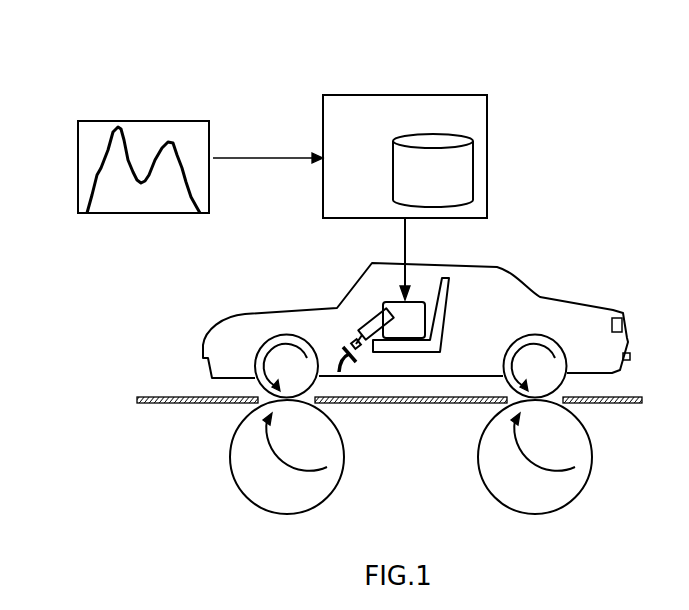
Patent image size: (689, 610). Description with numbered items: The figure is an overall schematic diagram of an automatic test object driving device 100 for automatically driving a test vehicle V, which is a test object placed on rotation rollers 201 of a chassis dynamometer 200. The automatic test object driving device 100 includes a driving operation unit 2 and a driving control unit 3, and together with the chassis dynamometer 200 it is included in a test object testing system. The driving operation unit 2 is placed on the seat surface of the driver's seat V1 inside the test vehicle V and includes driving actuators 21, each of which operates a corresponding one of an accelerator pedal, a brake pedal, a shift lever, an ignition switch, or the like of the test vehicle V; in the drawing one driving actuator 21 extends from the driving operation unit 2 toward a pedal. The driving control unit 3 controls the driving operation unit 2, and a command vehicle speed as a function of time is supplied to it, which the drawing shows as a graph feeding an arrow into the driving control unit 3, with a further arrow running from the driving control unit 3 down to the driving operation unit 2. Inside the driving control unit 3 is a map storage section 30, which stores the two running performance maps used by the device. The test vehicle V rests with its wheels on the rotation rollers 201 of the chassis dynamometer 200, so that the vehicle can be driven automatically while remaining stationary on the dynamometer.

The automatic test object driving device 100 is at (278, 65).
The driving control unit 3 is at (405, 94).
The map storage section 30 is at (473, 170).
The test vehicle V is at (243, 315).
The driver's seat V1 is at (447, 315).
The driving operation unit 2 is at (393, 300).
The driving actuator 21 is at (372, 320).
The chassis dynamometer 200 is at (211, 492).
The rotation roller 201 is at (229, 452).